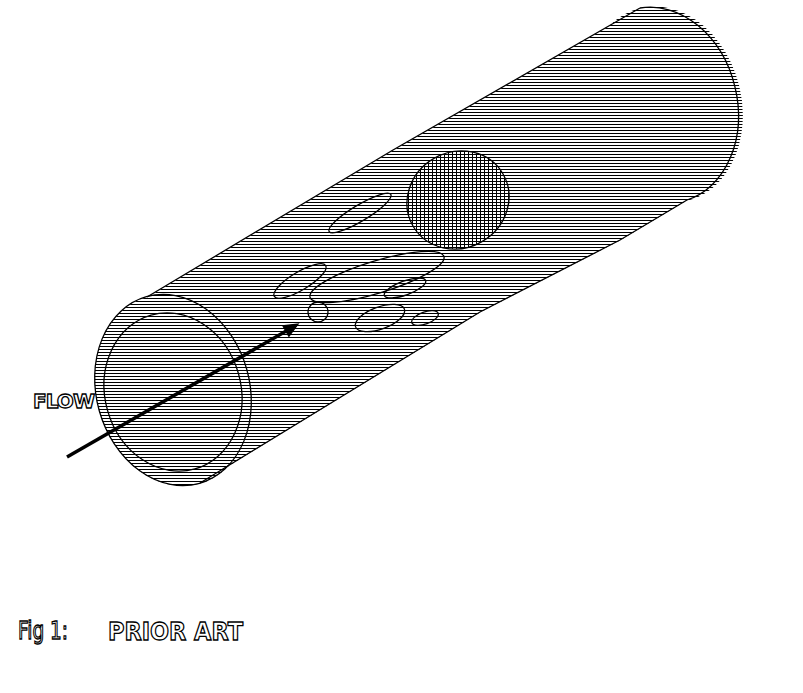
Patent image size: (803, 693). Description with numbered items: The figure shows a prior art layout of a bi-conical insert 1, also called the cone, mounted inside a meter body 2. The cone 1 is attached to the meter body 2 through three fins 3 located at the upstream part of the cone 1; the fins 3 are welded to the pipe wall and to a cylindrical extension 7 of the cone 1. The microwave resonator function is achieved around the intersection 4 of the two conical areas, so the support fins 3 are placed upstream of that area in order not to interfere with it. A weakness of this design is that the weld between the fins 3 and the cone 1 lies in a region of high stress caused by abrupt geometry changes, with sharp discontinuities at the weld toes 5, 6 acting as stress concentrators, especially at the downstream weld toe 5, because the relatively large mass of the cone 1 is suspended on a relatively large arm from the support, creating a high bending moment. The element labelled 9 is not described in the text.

The bi-conical insert 1 is at (447, 265).
The meter body 2 is at (466, 122).
The fins 3 is at (377, 340).
The intersection of the two conical areas 4 is at (500, 255).
The downstream weld toe 5 is at (392, 282).
The weld toe 6 is at (335, 322).
The cylindrical extension 7 is at (420, 328).
The fins 9 is at (337, 207).